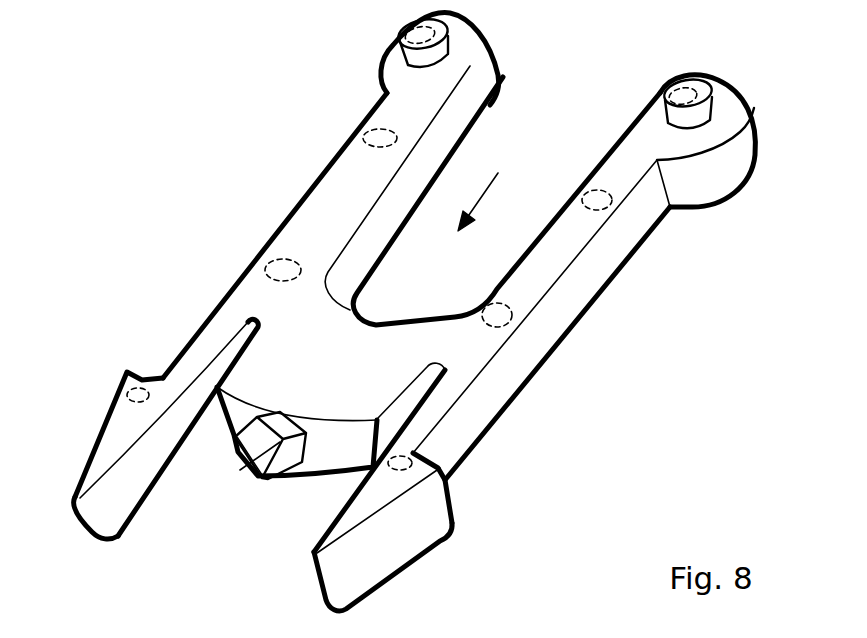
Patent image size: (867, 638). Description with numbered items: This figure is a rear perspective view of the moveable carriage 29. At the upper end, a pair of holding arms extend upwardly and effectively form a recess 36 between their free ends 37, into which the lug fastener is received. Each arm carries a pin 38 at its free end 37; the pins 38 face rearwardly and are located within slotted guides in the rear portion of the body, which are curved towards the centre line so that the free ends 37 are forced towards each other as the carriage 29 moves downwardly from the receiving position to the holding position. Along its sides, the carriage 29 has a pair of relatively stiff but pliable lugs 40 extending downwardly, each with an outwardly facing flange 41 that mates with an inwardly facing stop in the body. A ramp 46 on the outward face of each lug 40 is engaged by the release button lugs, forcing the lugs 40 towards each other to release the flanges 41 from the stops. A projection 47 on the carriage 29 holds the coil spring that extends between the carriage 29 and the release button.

The moveable carriage 29 is at (577, 320).
The recess 36 is at (499, 184).
The free end 37 is at (383, 60).
The pin 38 is at (663, 97).
The lug 40 is at (313, 567).
The outwardly facing flange 41 is at (145, 373).
The ramp 46 is at (97, 427).
The projection 47 is at (253, 473).